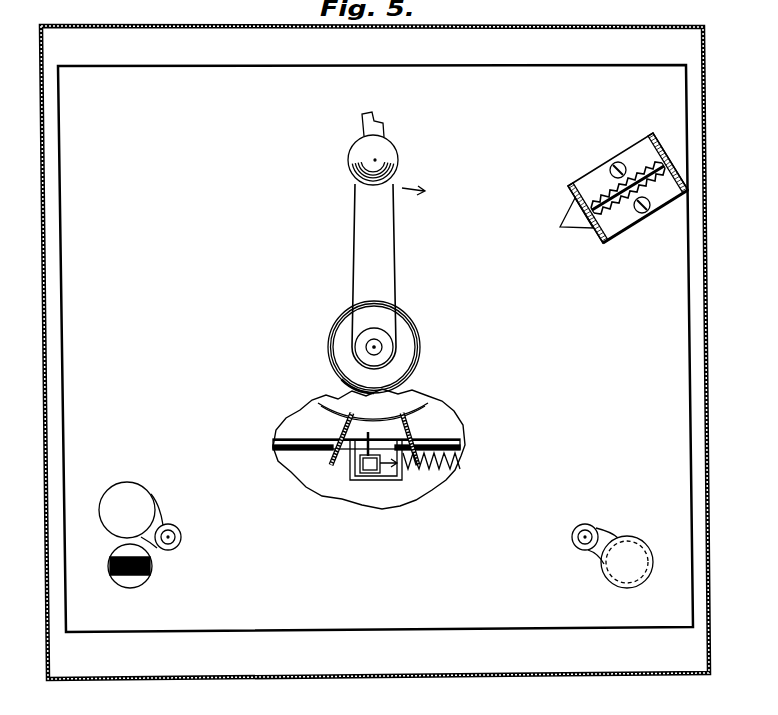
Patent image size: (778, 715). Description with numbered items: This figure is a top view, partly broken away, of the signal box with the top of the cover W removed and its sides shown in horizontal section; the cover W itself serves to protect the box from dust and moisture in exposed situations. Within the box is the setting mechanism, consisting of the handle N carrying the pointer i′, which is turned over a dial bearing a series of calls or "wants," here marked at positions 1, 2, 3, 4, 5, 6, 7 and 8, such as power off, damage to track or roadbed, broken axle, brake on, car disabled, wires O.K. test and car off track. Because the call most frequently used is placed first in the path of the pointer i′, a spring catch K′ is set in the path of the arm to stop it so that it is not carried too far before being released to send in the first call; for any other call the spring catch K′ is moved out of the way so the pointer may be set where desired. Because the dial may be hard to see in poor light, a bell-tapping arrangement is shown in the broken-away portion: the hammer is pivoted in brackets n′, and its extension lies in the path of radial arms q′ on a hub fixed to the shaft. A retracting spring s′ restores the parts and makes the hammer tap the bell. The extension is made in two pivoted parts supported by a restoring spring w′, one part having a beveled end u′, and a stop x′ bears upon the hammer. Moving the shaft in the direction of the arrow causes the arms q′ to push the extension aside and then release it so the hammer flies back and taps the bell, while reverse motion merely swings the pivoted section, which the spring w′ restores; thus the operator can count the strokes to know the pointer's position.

The cover W is at (93, 27).
The handle N is at (373, 252).
The pointer i′ is at (375, 118).
The spring catch K′ is at (628, 218).
The radial arms q′ is at (373, 439).
The restoring spring w′ is at (381, 440).
The beveled end u′ is at (376, 469).
The stop x′ is at (352, 463).
The brackets n′ is at (400, 475).
The retracting spring s′ is at (445, 472).
The dial position 1 (power off) 1 is at (466, 228).
The dial position 2 (damage to track or roadbed) 2 is at (525, 325).
The dial position 3 (broken axle) 3 is at (513, 431).
The dial position 4 (brake on) 4 is at (444, 536).
The dial position 5 (brake on) 5 is at (308, 533).
The dial position 6 (car disabled) 6 is at (245, 421).
The dial position 7 (wires O.K. test) 7 is at (218, 327).
The dial position 8 (car off track) 8 is at (274, 230).